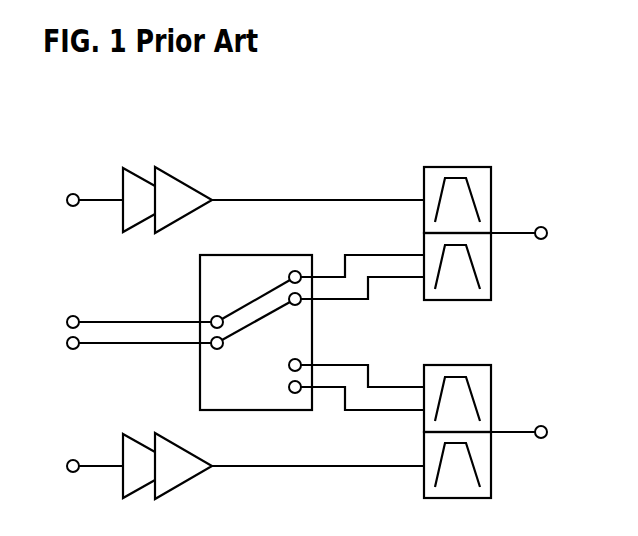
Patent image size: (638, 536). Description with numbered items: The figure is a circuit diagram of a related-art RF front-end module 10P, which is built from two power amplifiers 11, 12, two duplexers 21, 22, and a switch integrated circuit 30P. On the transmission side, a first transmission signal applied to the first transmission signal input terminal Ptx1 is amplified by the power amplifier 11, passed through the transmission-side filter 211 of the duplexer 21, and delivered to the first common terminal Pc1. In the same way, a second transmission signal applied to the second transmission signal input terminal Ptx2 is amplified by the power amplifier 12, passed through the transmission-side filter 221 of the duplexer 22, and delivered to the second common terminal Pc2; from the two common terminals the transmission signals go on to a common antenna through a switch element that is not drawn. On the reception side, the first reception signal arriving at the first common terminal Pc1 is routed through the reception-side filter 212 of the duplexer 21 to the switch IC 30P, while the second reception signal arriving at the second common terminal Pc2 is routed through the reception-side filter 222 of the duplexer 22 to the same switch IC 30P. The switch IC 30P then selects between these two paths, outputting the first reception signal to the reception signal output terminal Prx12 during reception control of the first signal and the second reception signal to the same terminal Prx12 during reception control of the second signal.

The RF front-end module 10P is at (518, 70).
The power amplifier 11 is at (187, 181).
The power amplifier 12 is at (191, 449).
The duplexer 21 is at (496, 164).
The transmission-side filter 211 is at (491, 188).
The reception-side filter 212 is at (491, 282).
The duplexer 22 is at (496, 364).
The transmission-side filter 221 is at (491, 487).
The reception-side filter 222 is at (491, 393).
The switch integrated circuit 30P is at (287, 254).
The first transmission signal input terminal Ptx1 is at (65, 197).
The second transmission signal input terminal Ptx2 is at (65, 463).
The reception signal output terminal Prx12 is at (58, 326).
The first common terminal Pc1 is at (550, 226).
The second common terminal Pc2 is at (550, 425).